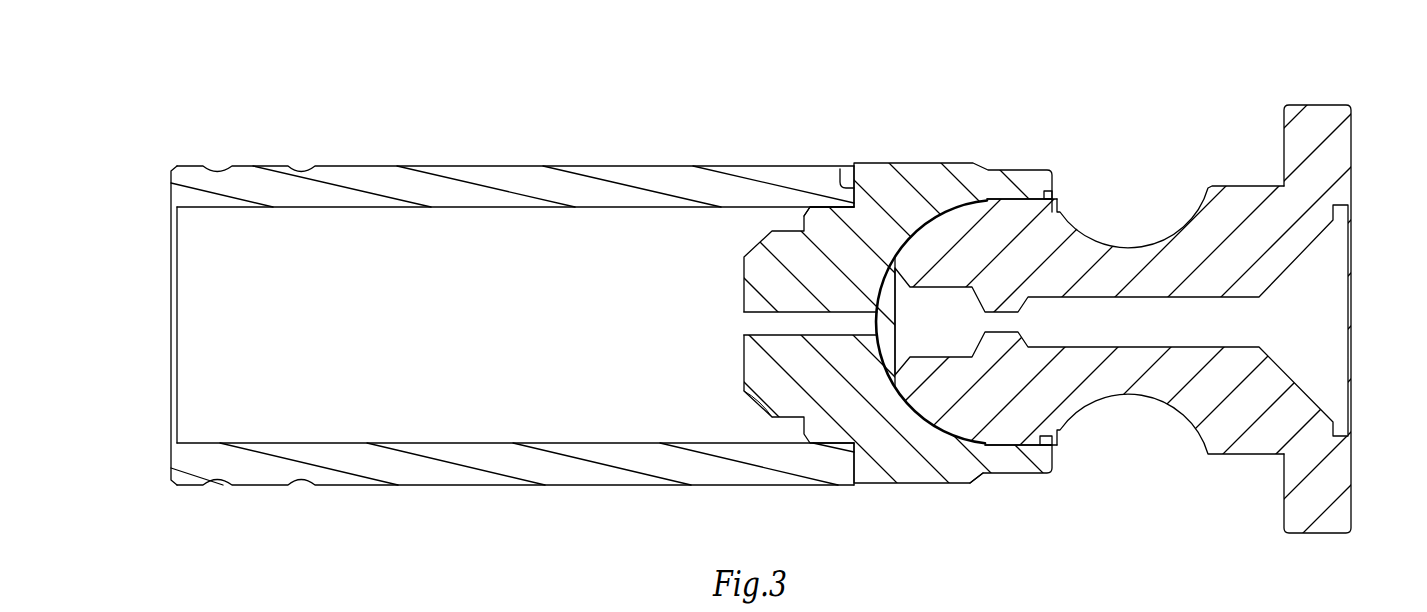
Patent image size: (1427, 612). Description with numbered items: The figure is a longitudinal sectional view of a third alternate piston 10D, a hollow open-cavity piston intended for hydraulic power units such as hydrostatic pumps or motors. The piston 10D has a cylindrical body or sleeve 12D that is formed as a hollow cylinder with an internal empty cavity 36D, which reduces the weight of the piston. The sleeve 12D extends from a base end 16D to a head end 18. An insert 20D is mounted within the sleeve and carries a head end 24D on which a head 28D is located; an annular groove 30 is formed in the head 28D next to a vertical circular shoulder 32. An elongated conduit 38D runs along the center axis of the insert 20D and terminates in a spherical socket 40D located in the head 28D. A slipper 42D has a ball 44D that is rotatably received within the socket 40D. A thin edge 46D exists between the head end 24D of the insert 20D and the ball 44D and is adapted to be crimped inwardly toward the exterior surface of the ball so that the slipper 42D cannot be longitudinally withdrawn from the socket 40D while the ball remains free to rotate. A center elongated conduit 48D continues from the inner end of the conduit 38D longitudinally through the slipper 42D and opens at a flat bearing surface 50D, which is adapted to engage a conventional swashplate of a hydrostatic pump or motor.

The piston 10D is at (172, 52).
The body 12D is at (384, 160).
The base end 16D is at (171, 190).
The head end 18 is at (852, 466).
The insert 20D is at (936, 158).
The head end 24D is at (1050, 178).
The head 28D is at (971, 479).
The annular groove 30 is at (818, 201).
The vertical circular shoulder 32 is at (842, 176).
The empty cavity 36D is at (595, 416).
The elongated conduit 38D is at (746, 320).
The spherical socket 40D is at (933, 430).
The slipper 42D is at (1163, 226).
The ball 44D is at (1053, 446).
The thin edge 46D is at (1058, 220).
The center elongated conduit 48D is at (1160, 298).
The flat bearing surface 50D is at (1349, 128).